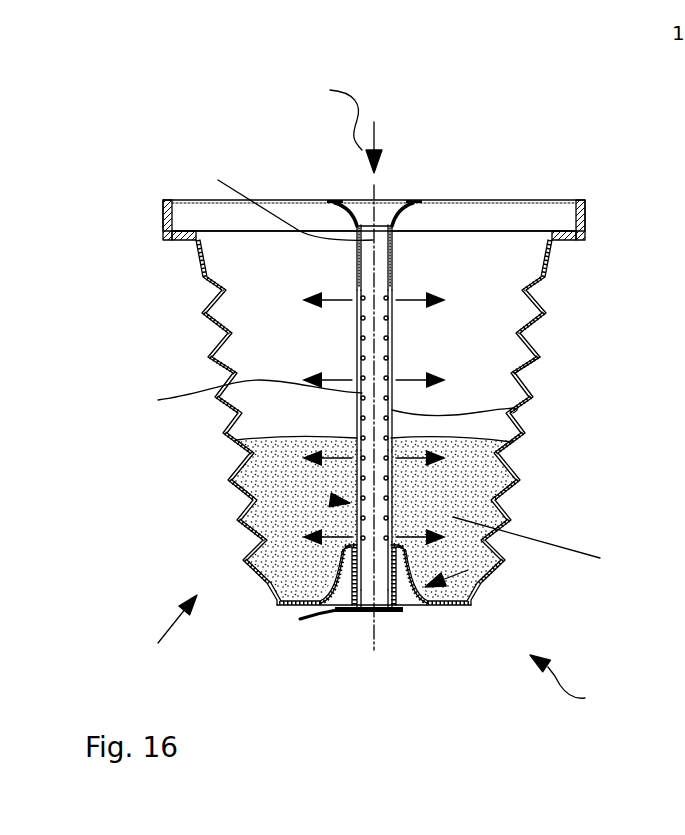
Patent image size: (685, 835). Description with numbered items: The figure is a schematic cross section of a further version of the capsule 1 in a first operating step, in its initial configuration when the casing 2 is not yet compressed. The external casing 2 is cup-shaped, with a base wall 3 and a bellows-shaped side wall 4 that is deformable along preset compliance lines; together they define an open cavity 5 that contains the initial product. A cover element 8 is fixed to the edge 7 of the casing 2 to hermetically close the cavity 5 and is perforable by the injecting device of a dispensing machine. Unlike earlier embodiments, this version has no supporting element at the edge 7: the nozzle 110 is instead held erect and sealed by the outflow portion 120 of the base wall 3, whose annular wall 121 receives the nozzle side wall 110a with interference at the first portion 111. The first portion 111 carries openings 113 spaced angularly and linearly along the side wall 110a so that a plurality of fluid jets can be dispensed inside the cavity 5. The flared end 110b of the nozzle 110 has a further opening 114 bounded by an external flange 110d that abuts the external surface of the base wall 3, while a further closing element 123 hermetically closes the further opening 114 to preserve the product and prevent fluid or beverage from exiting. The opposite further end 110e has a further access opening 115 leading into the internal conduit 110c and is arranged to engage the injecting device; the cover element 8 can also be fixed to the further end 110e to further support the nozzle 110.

The capsule 1 is at (168, 98).
The external casing 2 is at (560, 408).
The base wall 3 is at (283, 606).
The side wall 4 is at (538, 355).
The cavity 5 is at (482, 357).
The edge 7 is at (163, 235).
The cover element 8 is at (545, 200).
The nozzle 110 is at (358, 340).
The side wall 110a is at (353, 418).
The end 110b is at (353, 578).
The internal conduit 110c is at (388, 268).
The external flange 110d is at (352, 609).
The further end 110e is at (397, 225).
The first portion 111 is at (332, 500).
The openings 113 is at (513, 413).
The further opening 114 is at (378, 612).
The further access opening 115 is at (358, 222).
The outflow portion 120 is at (477, 602).
The annular wall 121 is at (353, 588).
The further closing element 123 is at (403, 612).